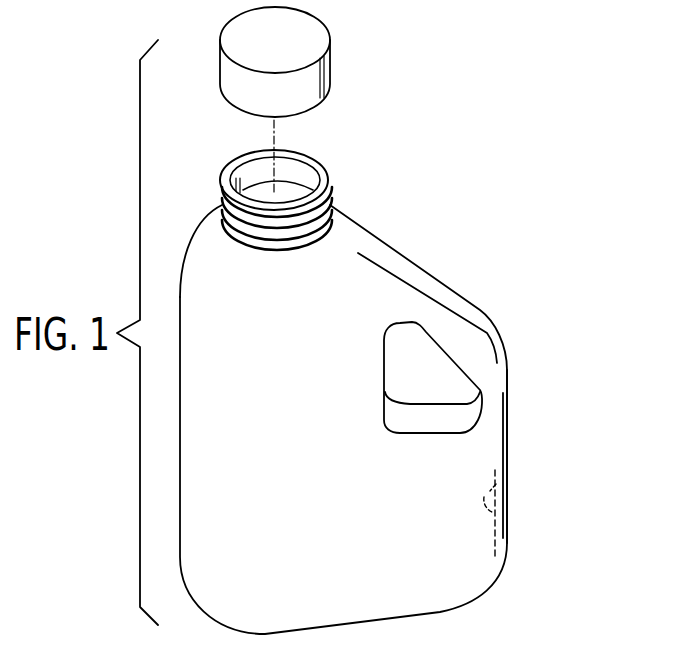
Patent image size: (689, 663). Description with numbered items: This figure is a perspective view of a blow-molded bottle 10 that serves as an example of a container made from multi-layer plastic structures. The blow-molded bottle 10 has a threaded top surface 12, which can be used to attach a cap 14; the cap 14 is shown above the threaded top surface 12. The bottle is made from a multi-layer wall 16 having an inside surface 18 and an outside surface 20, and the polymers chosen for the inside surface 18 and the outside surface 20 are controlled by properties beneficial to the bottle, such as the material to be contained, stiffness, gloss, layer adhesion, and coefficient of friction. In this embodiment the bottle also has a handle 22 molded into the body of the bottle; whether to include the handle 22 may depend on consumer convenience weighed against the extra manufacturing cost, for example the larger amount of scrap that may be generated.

The blow-molded bottle 10 is at (479, 191).
The threaded top surface 12 is at (328, 192).
The cap 14 is at (330, 62).
The multi-layer wall 16 is at (508, 435).
The inside surface 18 is at (505, 483).
The outside surface 20 is at (193, 243).
The handle 22 is at (455, 308).